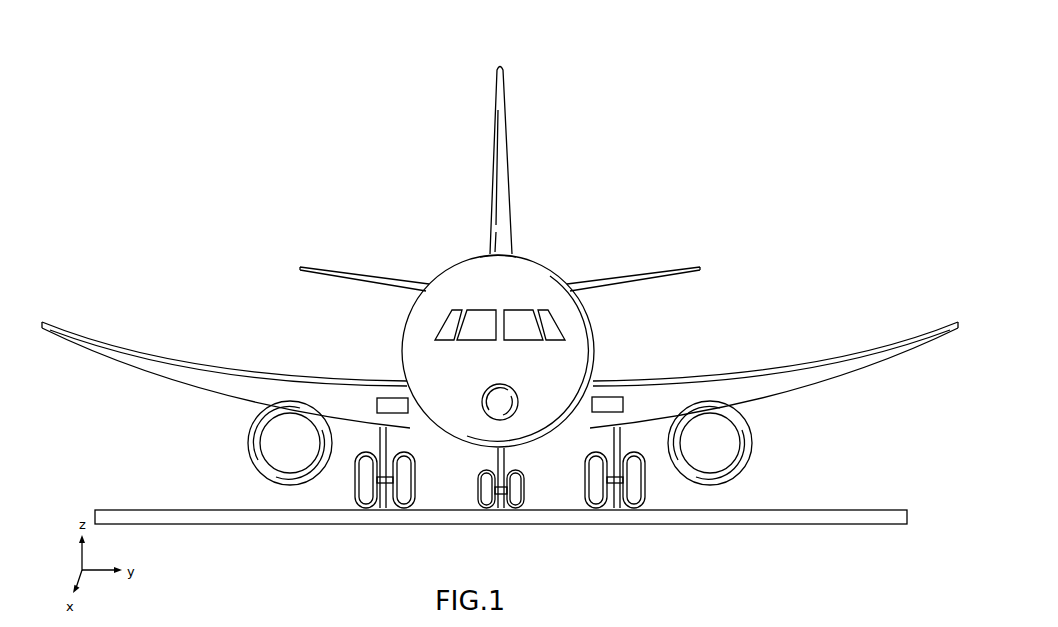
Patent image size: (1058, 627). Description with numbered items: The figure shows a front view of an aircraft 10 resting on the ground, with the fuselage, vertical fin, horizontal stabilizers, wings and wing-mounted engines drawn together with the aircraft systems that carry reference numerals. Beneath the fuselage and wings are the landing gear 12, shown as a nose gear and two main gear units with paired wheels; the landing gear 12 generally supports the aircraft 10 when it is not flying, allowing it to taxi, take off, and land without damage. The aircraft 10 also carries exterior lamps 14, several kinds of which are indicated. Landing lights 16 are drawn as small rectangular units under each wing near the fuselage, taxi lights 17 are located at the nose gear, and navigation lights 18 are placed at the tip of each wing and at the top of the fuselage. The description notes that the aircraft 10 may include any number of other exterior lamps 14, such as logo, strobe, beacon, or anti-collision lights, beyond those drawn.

The aircraft 10 is at (399, 81).
The landing gear 12 is at (500, 467).
The exterior lamps 14 is at (636, 354).
The landing lights 16 is at (377, 407).
The taxi lights 17 is at (498, 456).
The navigation lights 18 is at (508, 264).